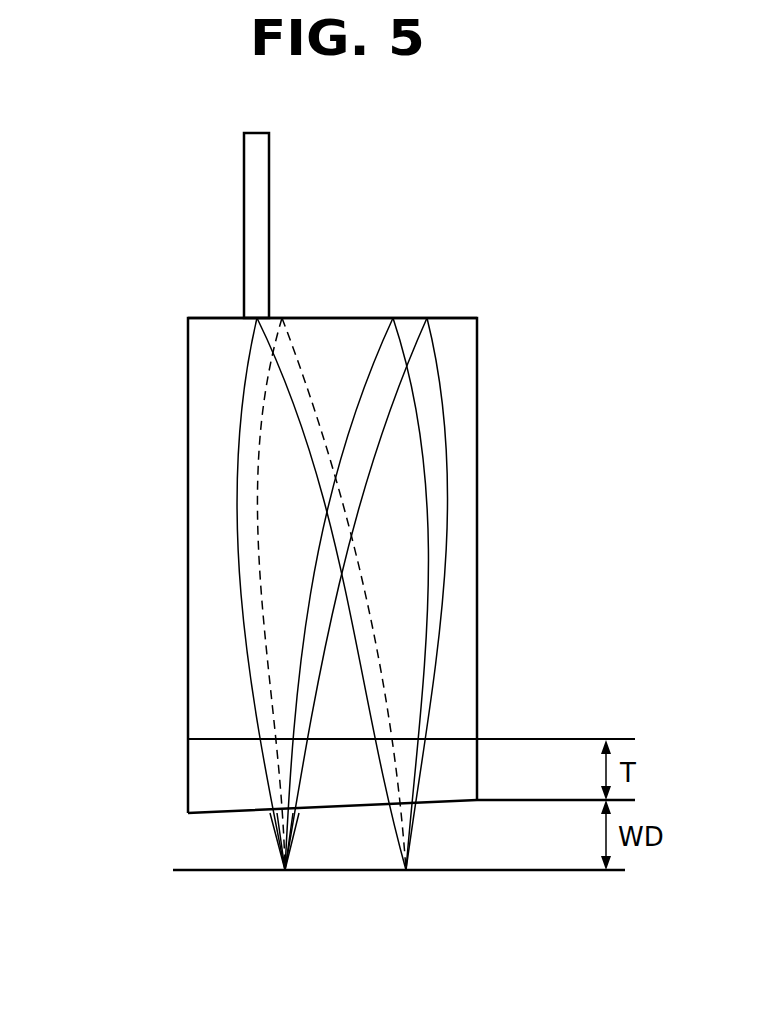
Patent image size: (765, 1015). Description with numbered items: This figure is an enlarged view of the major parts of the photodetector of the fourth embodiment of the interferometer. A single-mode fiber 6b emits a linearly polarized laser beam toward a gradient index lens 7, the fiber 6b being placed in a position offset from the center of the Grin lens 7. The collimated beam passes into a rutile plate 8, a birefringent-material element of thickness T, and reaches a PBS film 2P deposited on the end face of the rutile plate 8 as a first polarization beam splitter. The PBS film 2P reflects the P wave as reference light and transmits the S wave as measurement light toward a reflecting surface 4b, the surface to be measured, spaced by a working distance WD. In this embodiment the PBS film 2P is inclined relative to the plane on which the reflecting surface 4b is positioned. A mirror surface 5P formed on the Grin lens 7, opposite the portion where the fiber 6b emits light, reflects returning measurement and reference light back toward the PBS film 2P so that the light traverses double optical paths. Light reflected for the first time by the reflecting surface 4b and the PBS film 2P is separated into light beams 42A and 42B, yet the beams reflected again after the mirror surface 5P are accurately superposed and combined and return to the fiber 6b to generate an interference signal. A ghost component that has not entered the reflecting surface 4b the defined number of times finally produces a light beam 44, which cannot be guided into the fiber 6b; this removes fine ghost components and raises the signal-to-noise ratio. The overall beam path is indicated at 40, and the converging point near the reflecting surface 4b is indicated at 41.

The single-mode fiber 6b is at (258, 172).
The gradient index lens 7 is at (188, 355).
The mirror surface 5P is at (453, 317).
The rutile plate 8 is at (218, 763).
The PBS film 2P is at (220, 813).
The reflecting surface 4b is at (188, 872).
The light beam 40 is at (237, 532).
The light beam 44 is at (298, 350).
The light beam 42B is at (420, 443).
The light beam 42A is at (450, 487).
The focal point 41 is at (275, 825).